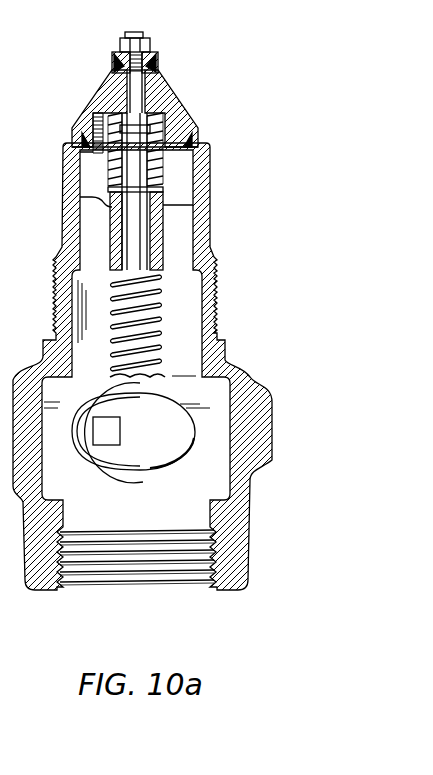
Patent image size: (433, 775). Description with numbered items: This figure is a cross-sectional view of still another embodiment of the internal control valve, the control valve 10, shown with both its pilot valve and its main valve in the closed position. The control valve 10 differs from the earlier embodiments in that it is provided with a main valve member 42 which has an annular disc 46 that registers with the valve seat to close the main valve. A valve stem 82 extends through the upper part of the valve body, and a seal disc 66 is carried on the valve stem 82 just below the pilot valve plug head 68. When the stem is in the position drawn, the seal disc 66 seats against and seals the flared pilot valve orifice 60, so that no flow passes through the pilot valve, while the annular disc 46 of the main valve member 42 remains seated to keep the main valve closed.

The control valve 10 is at (222, 225).
The main valve member 42 is at (78, 107).
The annular disc 46 is at (200, 137).
The flared pilot valve orifice 60 is at (157, 80).
The seal disc 66 is at (112, 67).
The pilot valve plug head 68 is at (157, 50).
The valve stem 82 is at (132, 97).